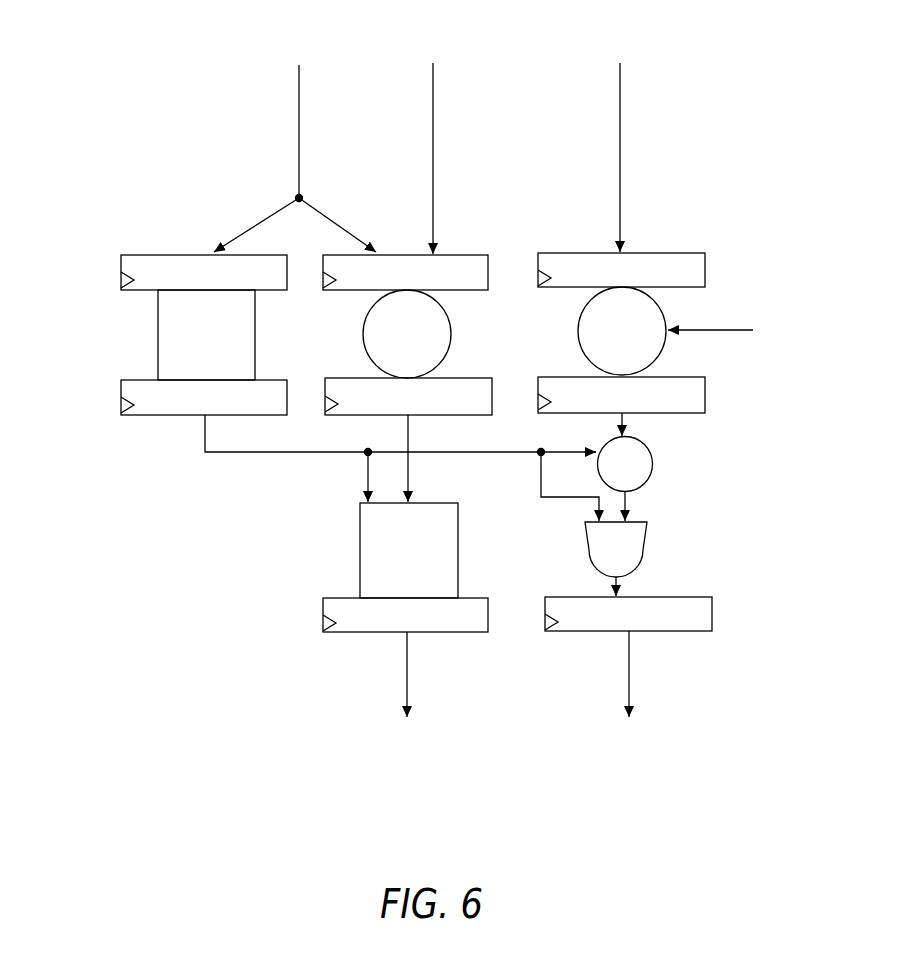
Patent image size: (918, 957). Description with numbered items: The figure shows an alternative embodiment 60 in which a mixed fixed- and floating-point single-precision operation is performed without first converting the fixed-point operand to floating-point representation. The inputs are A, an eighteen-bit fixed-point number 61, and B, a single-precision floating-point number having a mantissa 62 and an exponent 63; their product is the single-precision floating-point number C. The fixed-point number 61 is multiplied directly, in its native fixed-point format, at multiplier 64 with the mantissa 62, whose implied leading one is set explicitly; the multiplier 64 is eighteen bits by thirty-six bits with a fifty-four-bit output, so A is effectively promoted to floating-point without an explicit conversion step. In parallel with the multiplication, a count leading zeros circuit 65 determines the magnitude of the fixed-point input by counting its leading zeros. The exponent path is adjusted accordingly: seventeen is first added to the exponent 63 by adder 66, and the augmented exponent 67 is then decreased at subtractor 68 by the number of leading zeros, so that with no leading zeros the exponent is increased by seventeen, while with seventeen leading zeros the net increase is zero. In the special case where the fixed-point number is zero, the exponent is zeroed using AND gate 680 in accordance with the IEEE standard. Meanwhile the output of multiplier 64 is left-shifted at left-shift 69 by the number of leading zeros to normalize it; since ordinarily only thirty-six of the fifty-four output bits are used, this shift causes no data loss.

The alternative embodiment 60 is at (72, 161).
The fixed-point number 61 is at (299, 106).
The mantissa 62 is at (433, 104).
The exponent 63 is at (620, 108).
The multiplier 64 is at (452, 334).
The count leading zeros circuit 65 is at (255, 331).
The adder 66 is at (668, 316).
The augmented exponent 67 is at (687, 413).
The subtractor 68 is at (652, 470).
The left-shift 69 is at (438, 503).
The AND gate 680 is at (642, 551).